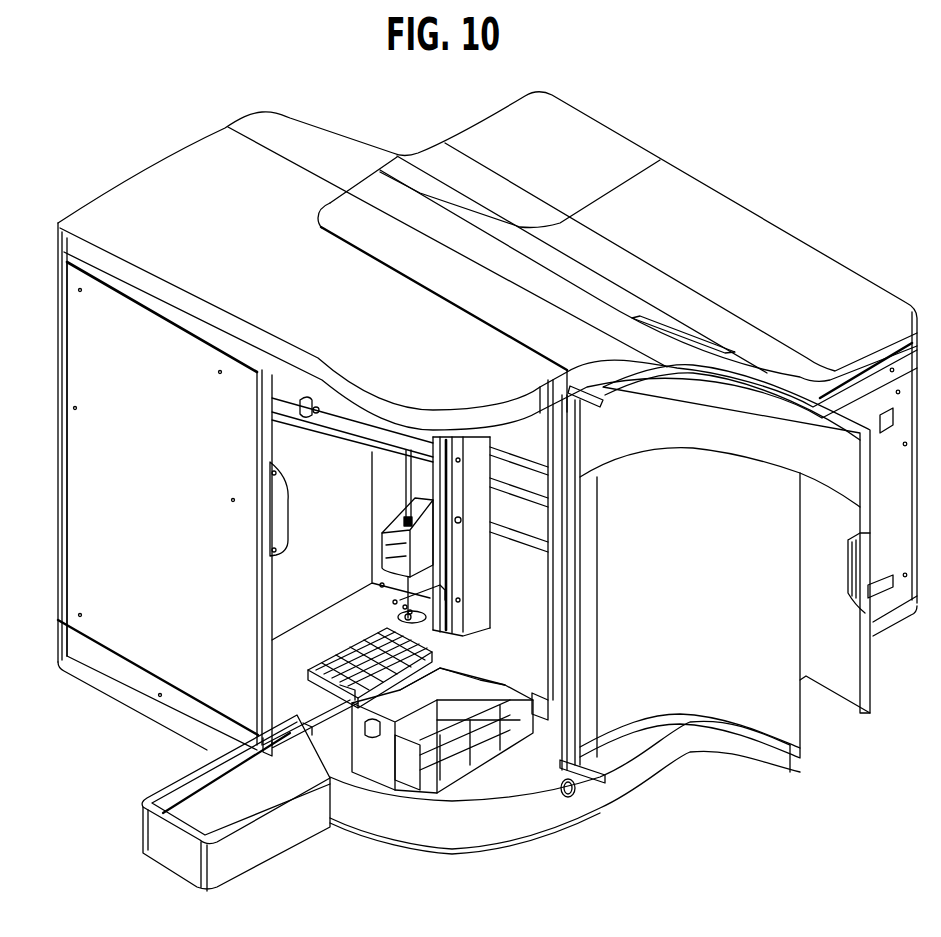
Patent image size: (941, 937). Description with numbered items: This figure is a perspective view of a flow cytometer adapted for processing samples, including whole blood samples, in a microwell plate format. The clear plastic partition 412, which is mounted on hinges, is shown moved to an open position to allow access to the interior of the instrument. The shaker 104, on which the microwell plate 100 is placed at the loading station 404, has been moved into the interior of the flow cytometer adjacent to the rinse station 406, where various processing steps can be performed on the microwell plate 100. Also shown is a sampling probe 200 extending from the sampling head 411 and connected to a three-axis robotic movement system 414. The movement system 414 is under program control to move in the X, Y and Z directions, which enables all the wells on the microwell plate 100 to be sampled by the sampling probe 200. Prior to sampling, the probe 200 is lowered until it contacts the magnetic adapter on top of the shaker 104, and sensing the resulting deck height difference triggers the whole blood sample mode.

The microwell plate 100 is at (347, 643).
The shaker 104 is at (310, 708).
The sampling probe 200 is at (400, 588).
The loading station 404 is at (257, 837).
The rinse station 406 is at (473, 733).
The sampling head 411 is at (400, 530).
The clear plastic partition 412 is at (838, 672).
The three-axis robotic movement system 414 is at (366, 558).